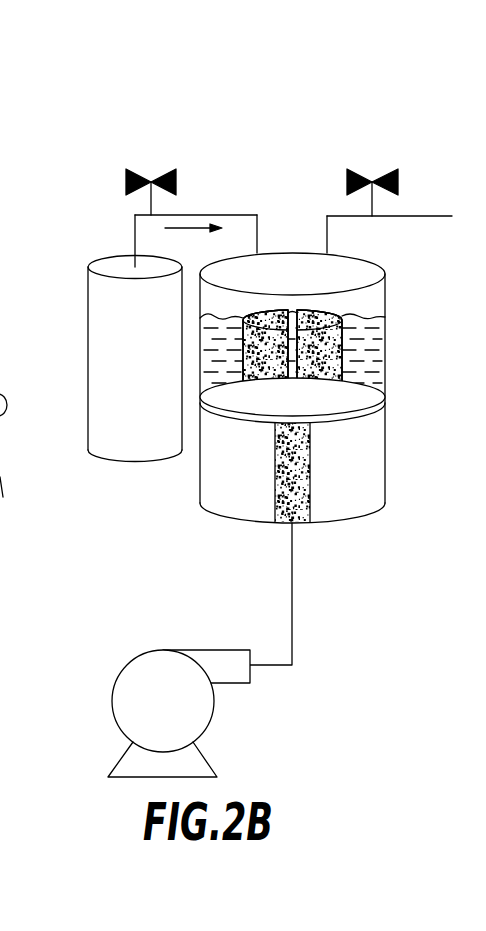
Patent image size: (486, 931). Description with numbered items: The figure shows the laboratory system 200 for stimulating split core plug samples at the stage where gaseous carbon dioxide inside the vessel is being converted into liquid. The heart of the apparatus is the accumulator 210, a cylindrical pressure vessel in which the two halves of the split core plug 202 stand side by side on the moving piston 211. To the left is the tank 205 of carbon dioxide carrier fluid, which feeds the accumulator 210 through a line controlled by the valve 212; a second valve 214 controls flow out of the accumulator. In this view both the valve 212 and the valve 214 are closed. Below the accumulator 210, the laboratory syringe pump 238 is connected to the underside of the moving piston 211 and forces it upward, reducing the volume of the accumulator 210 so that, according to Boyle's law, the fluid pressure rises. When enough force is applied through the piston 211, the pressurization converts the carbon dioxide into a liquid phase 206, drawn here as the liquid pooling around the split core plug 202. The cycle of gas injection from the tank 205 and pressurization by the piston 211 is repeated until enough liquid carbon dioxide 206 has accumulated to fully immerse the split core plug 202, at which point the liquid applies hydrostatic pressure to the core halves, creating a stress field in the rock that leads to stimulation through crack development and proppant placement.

The system 200 is at (235, 143).
The split core plug 202 is at (340, 342).
The tank 205 is at (118, 463).
The liquid phase 206 is at (371, 362).
The accumulator 210 is at (383, 397).
The moving piston 211 is at (348, 417).
The valve 212 is at (143, 168).
The valve 214 is at (377, 168).
The laboratory syringe pump 238 is at (131, 660).